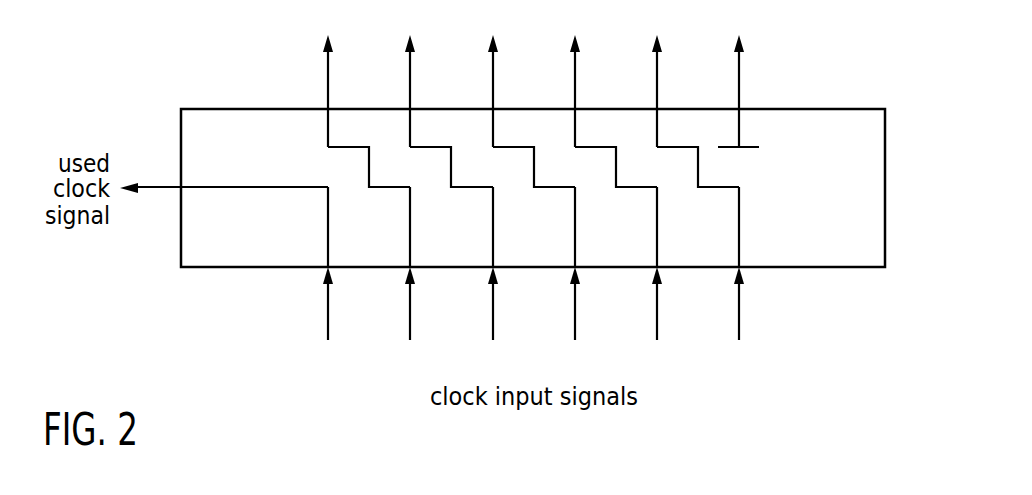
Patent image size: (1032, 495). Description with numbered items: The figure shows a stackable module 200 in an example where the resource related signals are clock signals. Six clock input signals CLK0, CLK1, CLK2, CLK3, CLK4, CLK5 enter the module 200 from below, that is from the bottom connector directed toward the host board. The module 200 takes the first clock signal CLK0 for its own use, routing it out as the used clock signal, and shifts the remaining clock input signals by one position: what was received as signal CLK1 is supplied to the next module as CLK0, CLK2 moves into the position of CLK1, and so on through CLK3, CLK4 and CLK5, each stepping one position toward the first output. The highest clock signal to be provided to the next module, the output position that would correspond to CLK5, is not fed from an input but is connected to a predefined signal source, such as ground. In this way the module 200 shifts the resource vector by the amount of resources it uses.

The module 200 is at (862, 108).
The first clock signal CLK0 is at (328, 320).
The clock input signal CLK1 is at (410, 320).
The clock input signal CLK2 is at (493, 320).
The clock input signal CLK3 is at (575, 320).
The clock input signal CLK4 is at (657, 320).
The clock input signal CLK5 is at (740, 320).